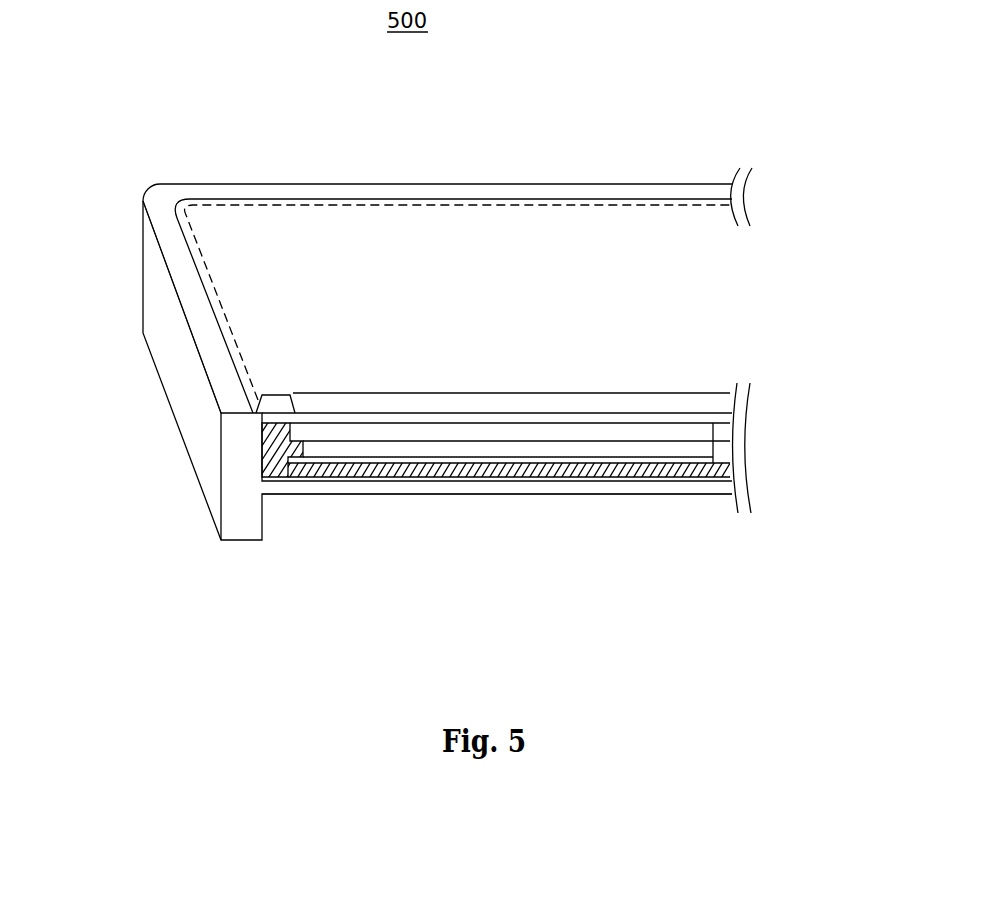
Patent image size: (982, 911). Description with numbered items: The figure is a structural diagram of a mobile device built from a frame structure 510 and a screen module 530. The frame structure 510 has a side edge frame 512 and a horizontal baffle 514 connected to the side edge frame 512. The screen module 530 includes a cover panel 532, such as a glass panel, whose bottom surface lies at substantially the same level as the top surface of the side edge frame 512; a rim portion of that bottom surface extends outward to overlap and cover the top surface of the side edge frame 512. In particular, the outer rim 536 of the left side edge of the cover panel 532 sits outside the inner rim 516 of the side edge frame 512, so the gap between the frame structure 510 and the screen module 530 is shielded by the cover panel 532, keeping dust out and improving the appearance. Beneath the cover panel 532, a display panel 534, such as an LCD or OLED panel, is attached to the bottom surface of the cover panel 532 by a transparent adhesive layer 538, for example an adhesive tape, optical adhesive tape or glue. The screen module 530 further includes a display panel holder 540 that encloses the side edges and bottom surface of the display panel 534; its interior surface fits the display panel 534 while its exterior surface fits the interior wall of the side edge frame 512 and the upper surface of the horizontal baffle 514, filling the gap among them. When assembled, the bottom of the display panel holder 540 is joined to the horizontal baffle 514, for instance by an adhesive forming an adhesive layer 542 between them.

The frame structure 510 is at (240, 532).
The side edge frame 512 is at (157, 345).
The horizontal baffle 514 is at (538, 488).
The inner rim 516 is at (233, 352).
The screen module 530 is at (512, 262).
The cover panel 532 is at (667, 405).
The display panel 534 is at (713, 442).
The outer rim 536 is at (205, 290).
The transparent adhesive layer 538 is at (583, 415).
The display panel holder 540 is at (287, 413).
The adhesive layer 542 is at (340, 478).